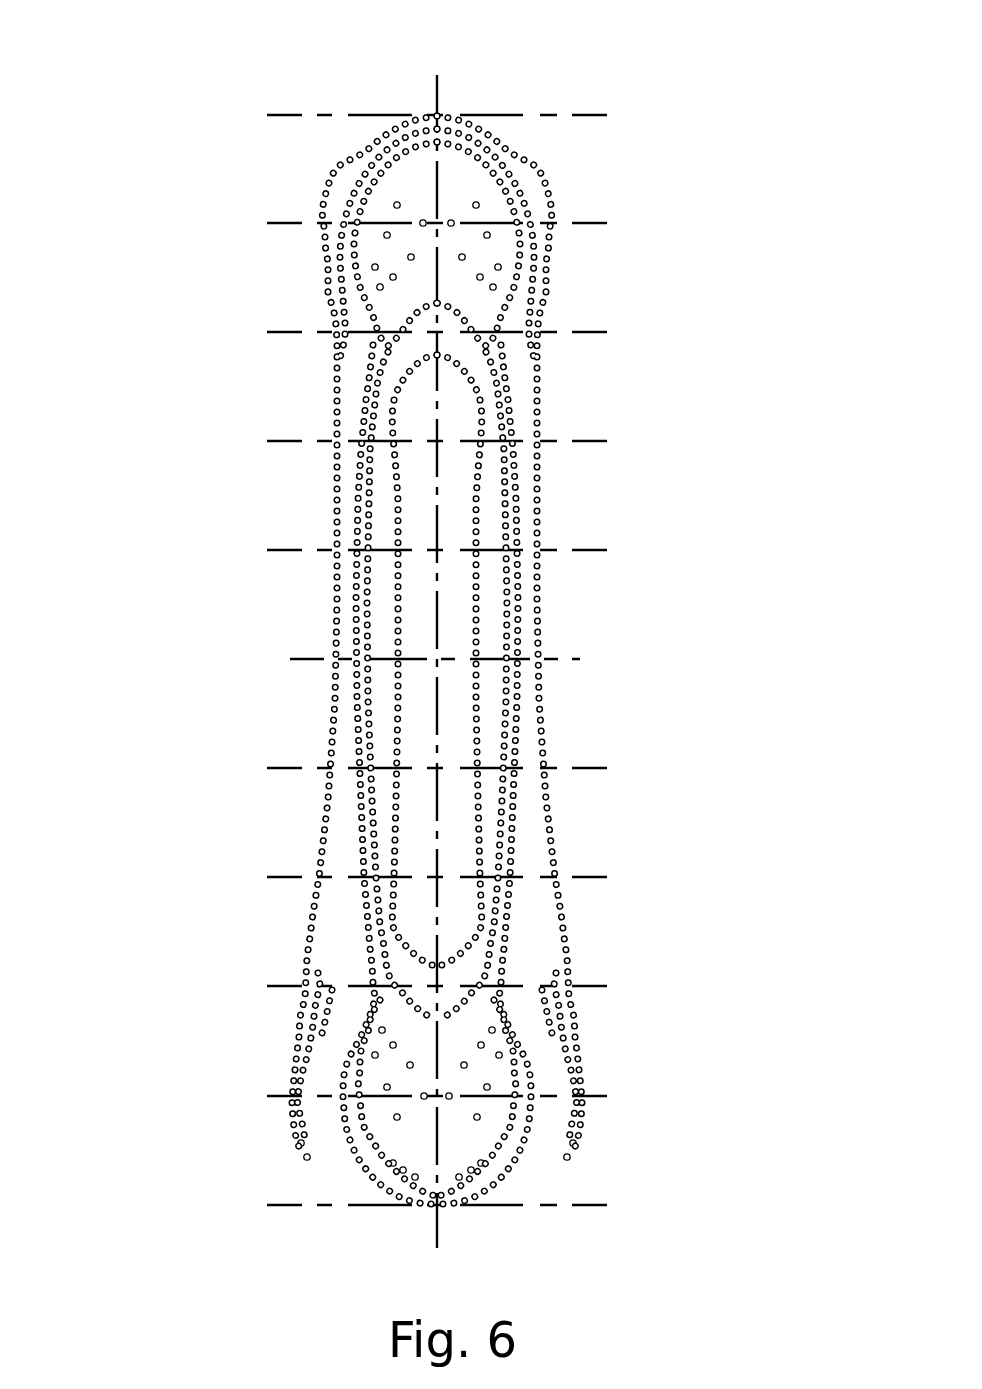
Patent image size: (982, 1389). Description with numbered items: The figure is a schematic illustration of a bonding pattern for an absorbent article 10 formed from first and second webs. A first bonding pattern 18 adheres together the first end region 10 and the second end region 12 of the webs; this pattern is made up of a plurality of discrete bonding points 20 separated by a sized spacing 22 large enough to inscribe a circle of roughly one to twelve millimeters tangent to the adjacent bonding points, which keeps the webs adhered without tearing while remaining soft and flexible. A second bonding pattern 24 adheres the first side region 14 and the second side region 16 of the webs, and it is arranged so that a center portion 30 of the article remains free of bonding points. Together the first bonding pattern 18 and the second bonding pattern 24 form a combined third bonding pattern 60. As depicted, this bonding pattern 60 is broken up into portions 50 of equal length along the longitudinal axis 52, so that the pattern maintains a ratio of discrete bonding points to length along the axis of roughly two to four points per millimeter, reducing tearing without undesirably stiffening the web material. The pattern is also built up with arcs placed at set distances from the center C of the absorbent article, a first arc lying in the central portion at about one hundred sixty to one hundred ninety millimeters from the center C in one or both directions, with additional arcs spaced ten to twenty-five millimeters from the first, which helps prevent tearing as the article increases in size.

The first end region 10 is at (433, 624).
The second end region 12 is at (310, 172).
The first side region 14 is at (300, 613).
The second side region 16 is at (572, 630).
The bonding pattern 18 is at (287, 1141).
The discrete bonding points 20 is at (520, 702).
The sized spacing 22 is at (525, 1130).
The second bonding pattern 24 is at (292, 688).
The center portion 30 is at (452, 595).
The portions 50 is at (568, 282).
The longitudinal axis 52 is at (443, 79).
The third bonding pattern 60 is at (298, 487).
The center C is at (437, 660).